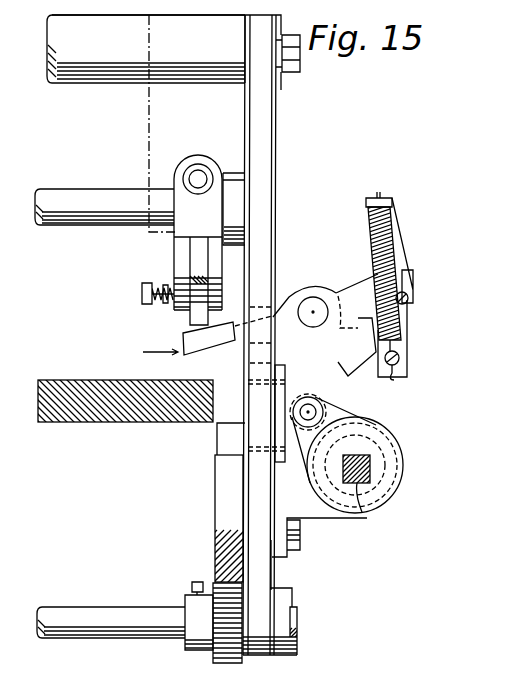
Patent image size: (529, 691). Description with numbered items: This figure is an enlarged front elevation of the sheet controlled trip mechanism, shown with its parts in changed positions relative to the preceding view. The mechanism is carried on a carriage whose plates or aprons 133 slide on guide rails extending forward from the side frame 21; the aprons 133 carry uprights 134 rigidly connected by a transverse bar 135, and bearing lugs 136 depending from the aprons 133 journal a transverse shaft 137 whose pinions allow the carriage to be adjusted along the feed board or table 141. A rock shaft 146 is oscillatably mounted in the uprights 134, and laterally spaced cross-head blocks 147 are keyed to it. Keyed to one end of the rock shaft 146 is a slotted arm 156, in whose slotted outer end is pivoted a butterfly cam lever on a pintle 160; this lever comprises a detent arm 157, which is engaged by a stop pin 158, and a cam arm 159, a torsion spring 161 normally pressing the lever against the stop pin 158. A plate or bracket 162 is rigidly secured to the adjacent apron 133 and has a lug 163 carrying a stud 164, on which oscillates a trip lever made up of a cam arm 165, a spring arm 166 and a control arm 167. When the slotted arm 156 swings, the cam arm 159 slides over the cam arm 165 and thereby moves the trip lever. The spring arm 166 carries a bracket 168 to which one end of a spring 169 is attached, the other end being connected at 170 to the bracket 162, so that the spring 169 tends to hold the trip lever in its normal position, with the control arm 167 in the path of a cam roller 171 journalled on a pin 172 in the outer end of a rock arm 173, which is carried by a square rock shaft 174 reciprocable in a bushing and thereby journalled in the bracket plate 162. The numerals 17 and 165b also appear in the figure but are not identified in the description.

The shaft 17 is at (146, 199).
The side frame 21 is at (214, 513).
The plate or apron 133 is at (263, 566).
The upright 134 is at (270, 125).
The transverse bar 135 is at (133, 75).
The bearing lug 136 is at (268, 660).
The transverse shaft 137 is at (135, 607).
The feed board or table 141 is at (110, 423).
The rock shaft 146 is at (115, 177).
The cross-head block 147 is at (213, 663).
The slotted arm 156 is at (198, 232).
The detent arm 157 is at (196, 262).
The stop pin 158 is at (193, 272).
The cam arm 159 is at (181, 323).
The pintle 160 is at (143, 292).
The torsion spring 161 is at (165, 303).
The plate or bracket 162 is at (317, 522).
The lug 163 is at (288, 293).
The stud 164 is at (312, 305).
The cam arm 165 is at (234, 343).
The direction arrow 165b is at (177, 342).
The spring arm 166 is at (358, 290).
The control arm 167 is at (357, 362).
The bracket 168 is at (397, 204).
The spring 169 is at (370, 220).
The spring connection 170 is at (393, 380).
The cam roller 171 is at (340, 421).
The pin 172 is at (330, 400).
The rock arm 173 is at (308, 462).
The square rock shaft 174 is at (368, 512).